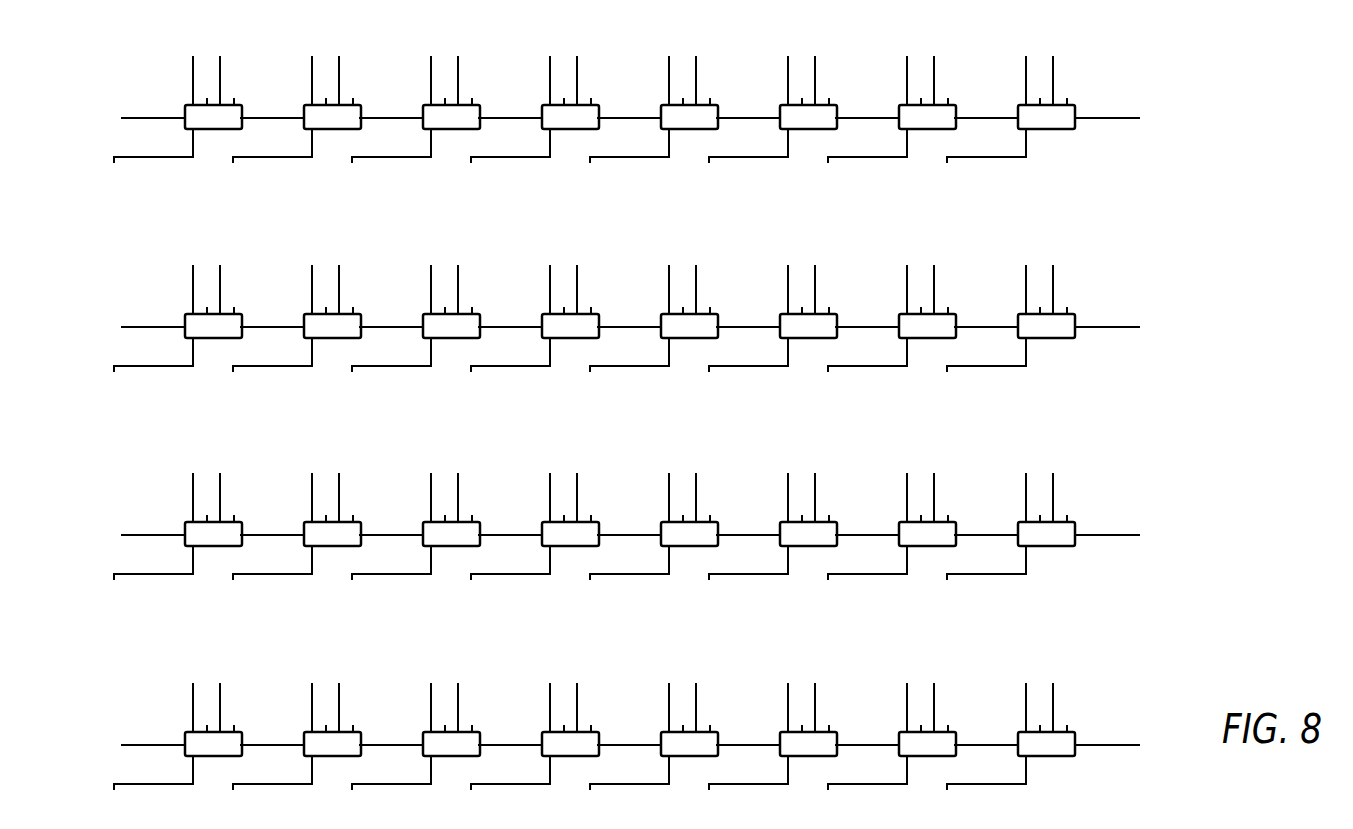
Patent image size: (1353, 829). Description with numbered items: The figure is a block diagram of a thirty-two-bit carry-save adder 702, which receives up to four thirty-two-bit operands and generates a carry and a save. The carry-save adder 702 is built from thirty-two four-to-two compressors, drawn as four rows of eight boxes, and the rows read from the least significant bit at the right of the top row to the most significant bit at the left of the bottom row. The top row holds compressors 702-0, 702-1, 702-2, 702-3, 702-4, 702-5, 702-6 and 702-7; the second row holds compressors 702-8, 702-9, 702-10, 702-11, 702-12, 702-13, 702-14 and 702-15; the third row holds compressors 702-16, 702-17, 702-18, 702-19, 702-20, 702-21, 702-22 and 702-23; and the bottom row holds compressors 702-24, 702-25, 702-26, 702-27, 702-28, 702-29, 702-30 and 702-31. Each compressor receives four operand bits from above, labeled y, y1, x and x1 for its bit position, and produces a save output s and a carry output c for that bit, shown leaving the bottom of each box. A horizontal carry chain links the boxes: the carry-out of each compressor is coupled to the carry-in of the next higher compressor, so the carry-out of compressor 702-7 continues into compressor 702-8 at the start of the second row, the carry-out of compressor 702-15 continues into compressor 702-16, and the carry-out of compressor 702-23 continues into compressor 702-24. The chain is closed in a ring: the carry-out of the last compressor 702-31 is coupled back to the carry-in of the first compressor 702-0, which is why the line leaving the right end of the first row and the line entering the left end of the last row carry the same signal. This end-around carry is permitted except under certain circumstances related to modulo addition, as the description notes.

The 32-bit carry-save adder 702 is at (1198, 118).
The 4:2 compressor 702-0 is at (1005, 96).
The 4:2 compressor 702-1 is at (886, 96).
The 4:2 compressor 702-2 is at (767, 96).
The 4:2 compressor 702-3 is at (648, 96).
The 4:2 compressor 702-4 is at (529, 96).
The 4:2 compressor 702-5 is at (410, 96).
The 4:2 compressor 702-6 is at (291, 96).
The 4:2 compressor 702-7 is at (172, 96).
The 4:2 compressor 702-8 is at (1005, 305).
The 4:2 compressor 702-9 is at (885, 305).
The 4:2 compressor 702-10 is at (768, 305).
The 4:2 compressor 702-11 is at (649, 305).
The 4:2 compressor 702-12 is at (530, 305).
The 4:2 compressor 702-13 is at (411, 305).
The 4:2 compressor 702-14 is at (292, 305).
The 4:2 compressor 702-15 is at (173, 305).
The 4:2 compressor 702-16 is at (1006, 513).
The 4:2 compressor 702-17 is at (887, 513).
The 4:2 compressor 702-18 is at (768, 513).
The 4:2 compressor 702-19 is at (649, 513).
The 4:2 compressor 702-20 is at (530, 513).
The 4:2 compressor 702-21 is at (411, 513).
The 4:2 compressor 702-22 is at (292, 513).
The 4:2 compressor 702-23 is at (173, 513).
The 4:2 compressor 702-24 is at (1006, 723).
The 4:2 compressor 702-25 is at (887, 723).
The 4:2 compressor 702-26 is at (768, 723).
The 4:2 compressor 702-27 is at (649, 723).
The 4:2 compressor 702-28 is at (530, 723).
The 4:2 compressor 702-29 is at (411, 723).
The 4:2 compressor 702-30 is at (292, 723).
The 4:2 compressor 702-31 is at (173, 723).